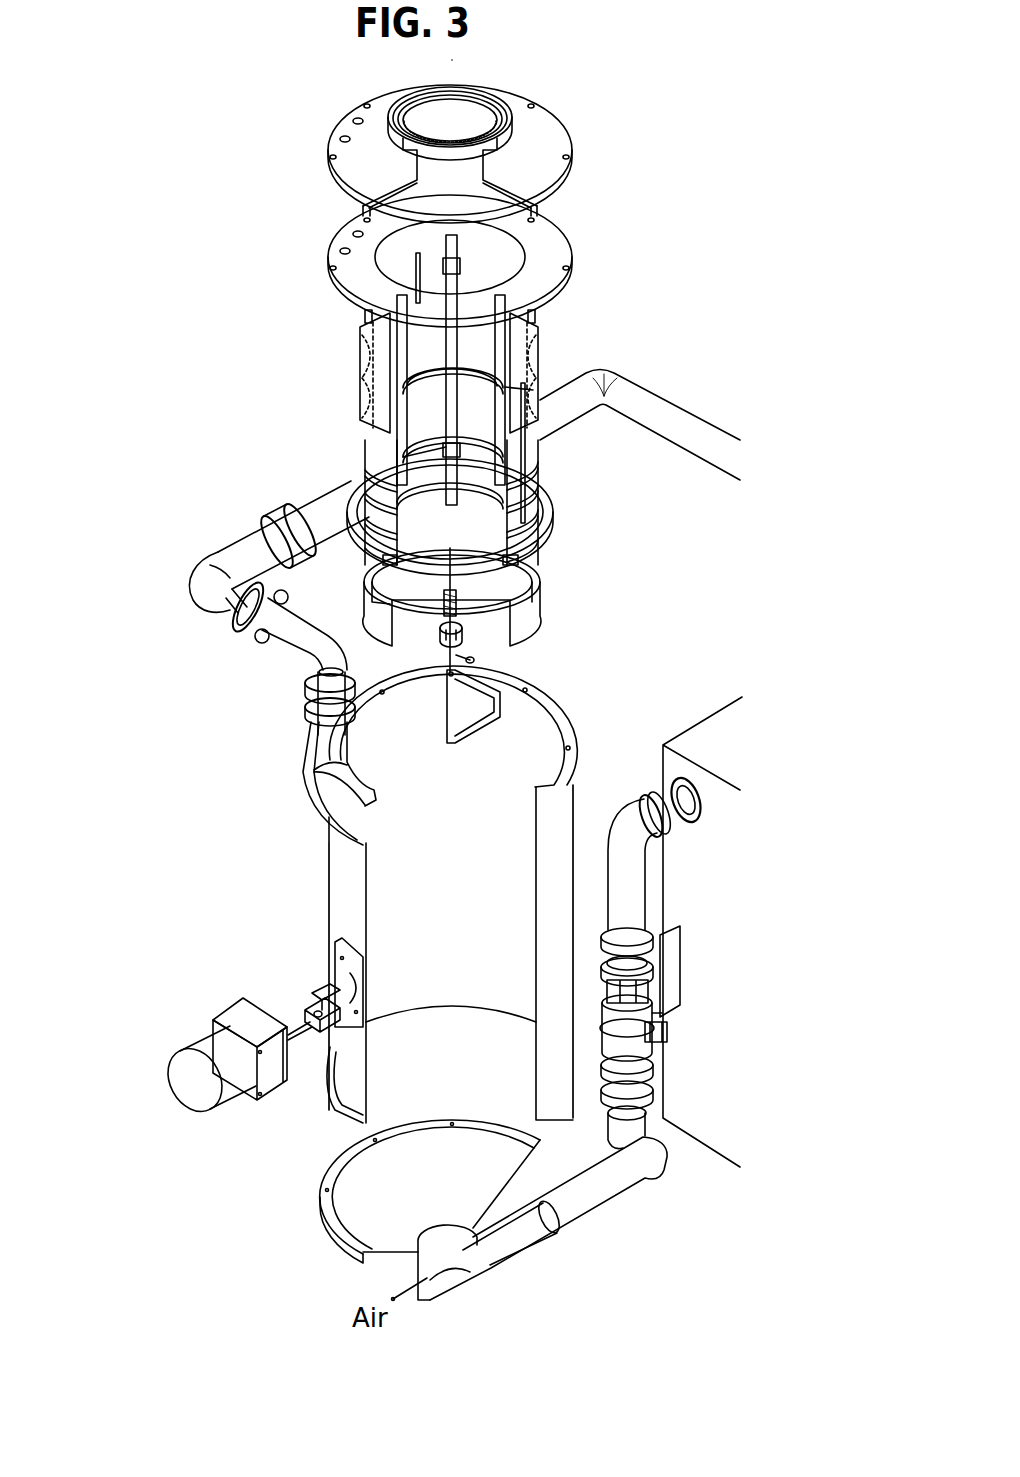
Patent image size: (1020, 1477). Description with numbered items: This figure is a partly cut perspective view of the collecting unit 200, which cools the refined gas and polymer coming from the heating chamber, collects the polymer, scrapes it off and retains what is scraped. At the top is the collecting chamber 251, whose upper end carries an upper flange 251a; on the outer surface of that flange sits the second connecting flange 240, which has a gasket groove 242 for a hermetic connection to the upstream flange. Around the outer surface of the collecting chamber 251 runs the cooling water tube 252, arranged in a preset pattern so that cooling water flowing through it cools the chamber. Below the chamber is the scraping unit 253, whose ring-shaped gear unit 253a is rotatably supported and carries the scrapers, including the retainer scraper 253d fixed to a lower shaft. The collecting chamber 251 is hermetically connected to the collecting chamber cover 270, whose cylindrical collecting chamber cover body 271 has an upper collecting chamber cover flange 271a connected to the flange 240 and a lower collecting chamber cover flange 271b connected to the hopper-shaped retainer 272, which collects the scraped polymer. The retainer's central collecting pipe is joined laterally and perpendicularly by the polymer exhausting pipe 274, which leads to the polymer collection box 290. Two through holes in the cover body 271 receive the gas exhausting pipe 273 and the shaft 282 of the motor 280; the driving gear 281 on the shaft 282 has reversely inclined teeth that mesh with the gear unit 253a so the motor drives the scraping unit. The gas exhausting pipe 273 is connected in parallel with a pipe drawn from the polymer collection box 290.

The collecting unit 200 is at (225, 218).
The second connecting flange 240 is at (542, 134).
The gasket groove 242 is at (455, 100).
The collecting chamber 251 is at (390, 350).
The upper flange 251a is at (555, 284).
The cooling water tube 252 is at (542, 340).
The scraping unit 253 is at (550, 548).
The gear unit 253a is at (560, 500).
The retainer scraper 253d is at (475, 735).
The collecting chamber cover 270 is at (305, 904).
The collecting chamber cover body 271 is at (565, 796).
The collecting chamber cover flange 271a is at (548, 700).
The collecting chamber cover flange 271b is at (560, 1113).
The retainer 272 is at (347, 1212).
The gas exhausting pipe 273 is at (306, 762).
The polymer exhausting pipe 274 is at (675, 1180).
The motor 280 is at (162, 1023).
The driving gear 281 is at (330, 992).
The shaft 282 is at (296, 1045).
The polymer collection box 290 is at (710, 991).